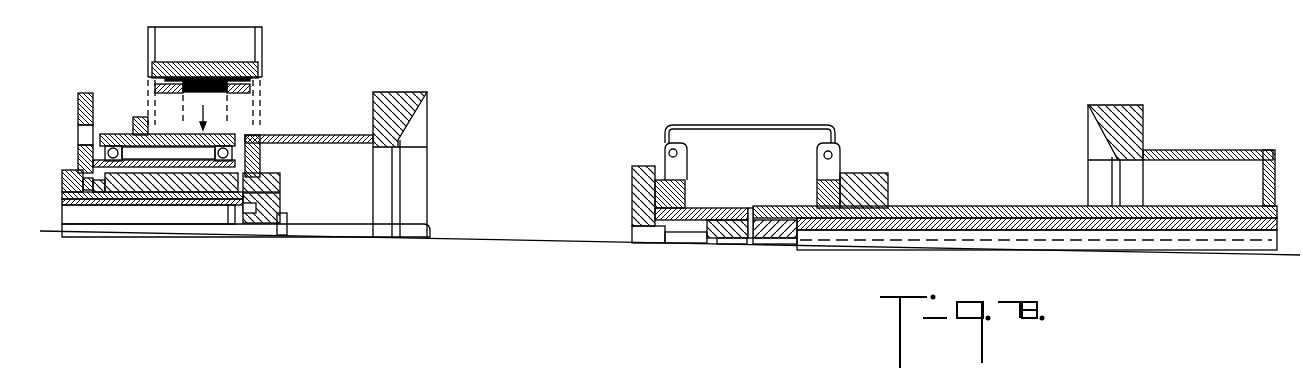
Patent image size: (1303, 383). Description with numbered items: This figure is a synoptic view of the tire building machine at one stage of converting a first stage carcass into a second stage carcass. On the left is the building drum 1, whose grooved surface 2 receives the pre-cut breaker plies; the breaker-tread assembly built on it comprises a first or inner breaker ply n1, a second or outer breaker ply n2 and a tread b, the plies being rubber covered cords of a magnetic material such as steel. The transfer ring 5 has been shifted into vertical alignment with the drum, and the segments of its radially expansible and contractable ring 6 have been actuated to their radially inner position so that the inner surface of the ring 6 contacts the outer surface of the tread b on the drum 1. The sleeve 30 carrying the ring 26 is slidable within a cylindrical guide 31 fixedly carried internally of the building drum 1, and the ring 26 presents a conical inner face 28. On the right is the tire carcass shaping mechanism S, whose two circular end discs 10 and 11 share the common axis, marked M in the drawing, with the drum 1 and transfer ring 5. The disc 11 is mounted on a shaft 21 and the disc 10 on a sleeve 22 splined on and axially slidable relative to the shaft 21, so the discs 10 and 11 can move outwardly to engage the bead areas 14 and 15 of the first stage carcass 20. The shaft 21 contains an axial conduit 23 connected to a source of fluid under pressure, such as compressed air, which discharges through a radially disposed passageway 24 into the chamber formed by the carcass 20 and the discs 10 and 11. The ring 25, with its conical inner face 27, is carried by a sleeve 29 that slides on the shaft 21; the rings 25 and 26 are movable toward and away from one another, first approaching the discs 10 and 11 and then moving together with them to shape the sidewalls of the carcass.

The building drum 1 is at (253, 90).
The grooved surface 2 is at (228, 95).
The transfer ring 5 is at (262, 40).
The radially expansible and contractable ring 6 is at (153, 66).
The tread b is at (257, 71).
The first or inner breaker ply n1 is at (163, 119).
The second or outer breaker ply n2 is at (186, 68).
The circular end plate or disc 10 is at (840, 158).
The circular end plate or disc 11 is at (663, 149).
The bead area 14 is at (835, 140).
The bead area 15 is at (667, 136).
The first stage carcass 20 is at (787, 127).
The shaft 21 is at (1017, 207).
The sleeve 22 is at (958, 216).
The axial conduit or pipe line 23 is at (900, 244).
The radially disposed passageway 24 is at (752, 215).
The ring 25 is at (1141, 107).
The ring 26 is at (393, 107).
The inner face 27 is at (1113, 148).
The inner face 28 is at (398, 132).
The sleeve 29 is at (1284, 158).
The sleeve 30 is at (150, 205).
The cylindrical guide 31 is at (280, 190).
The tire carcass shaping mechanism S is at (662, 90).
The center axis M is at (757, 125).